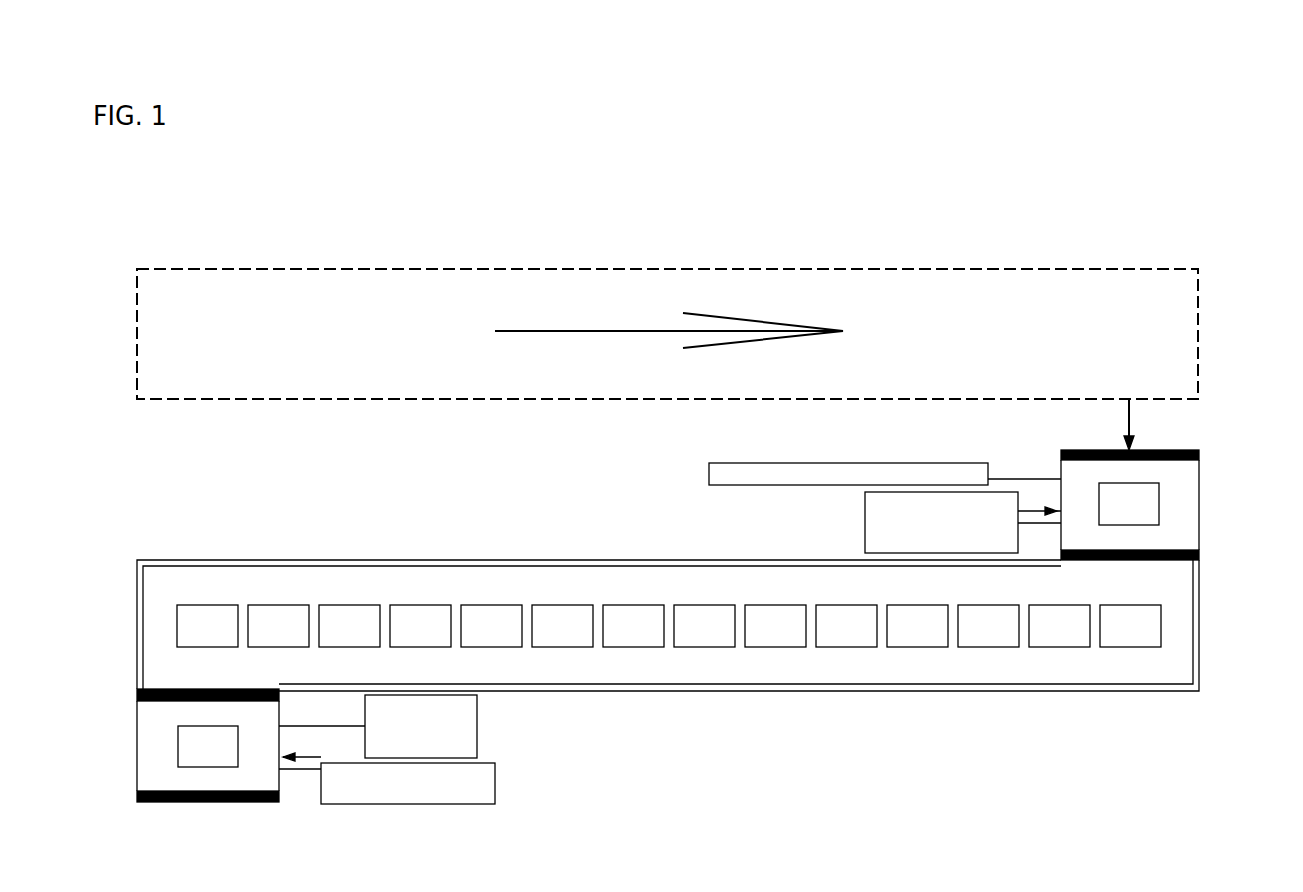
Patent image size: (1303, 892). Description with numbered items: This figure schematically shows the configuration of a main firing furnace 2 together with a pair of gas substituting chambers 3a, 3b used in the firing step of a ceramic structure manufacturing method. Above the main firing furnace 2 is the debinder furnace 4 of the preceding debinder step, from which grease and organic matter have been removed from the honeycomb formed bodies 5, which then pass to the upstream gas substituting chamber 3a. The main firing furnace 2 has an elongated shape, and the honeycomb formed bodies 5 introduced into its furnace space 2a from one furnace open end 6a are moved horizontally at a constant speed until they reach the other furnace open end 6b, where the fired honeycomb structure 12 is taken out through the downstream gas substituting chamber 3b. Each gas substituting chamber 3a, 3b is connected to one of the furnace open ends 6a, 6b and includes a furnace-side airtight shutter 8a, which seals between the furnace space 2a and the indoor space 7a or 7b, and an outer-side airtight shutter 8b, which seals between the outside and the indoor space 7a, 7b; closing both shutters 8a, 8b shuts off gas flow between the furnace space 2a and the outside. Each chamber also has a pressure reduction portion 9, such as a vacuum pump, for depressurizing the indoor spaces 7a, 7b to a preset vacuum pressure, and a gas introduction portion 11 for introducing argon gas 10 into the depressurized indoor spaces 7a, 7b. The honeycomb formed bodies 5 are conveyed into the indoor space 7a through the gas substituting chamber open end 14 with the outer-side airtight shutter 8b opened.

The main firing furnace 2 is at (788, 560).
The furnace space 2a is at (444, 578).
The gas substituting chamber 3a is at (1199, 520).
The gas substituting chamber 3b is at (282, 791).
The debinder furnace 4 is at (820, 268).
The honeycomb formed body 5 is at (1064, 640).
The furnace open end 6a is at (1183, 563).
The furnace open end 6b is at (170, 687).
The indoor space 7a is at (1183, 488).
The indoor space 7b is at (150, 752).
The furnace-side airtight shutter 8a is at (1199, 554).
The outer-side airtight shutter 8b is at (1074, 450).
The pressure reduction portion 9 is at (942, 462).
The argon gas 10 is at (1021, 507).
The gas introduction portion 11 is at (865, 520).
The honeycomb structure 12 is at (225, 747).
The gas substituting chamber open end 14 is at (1147, 450).